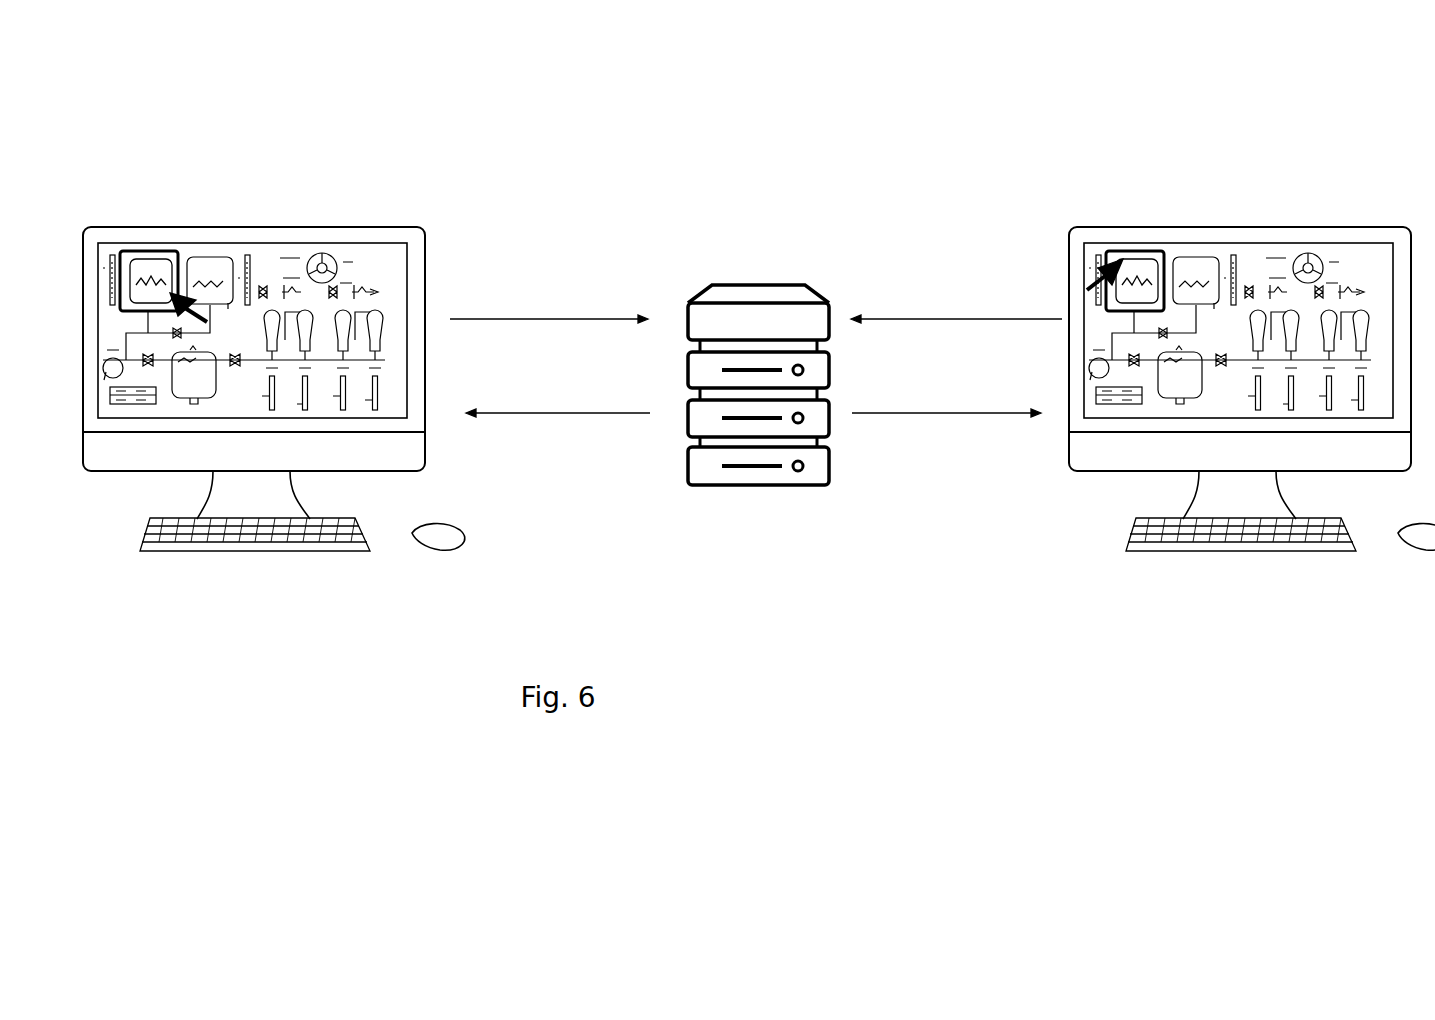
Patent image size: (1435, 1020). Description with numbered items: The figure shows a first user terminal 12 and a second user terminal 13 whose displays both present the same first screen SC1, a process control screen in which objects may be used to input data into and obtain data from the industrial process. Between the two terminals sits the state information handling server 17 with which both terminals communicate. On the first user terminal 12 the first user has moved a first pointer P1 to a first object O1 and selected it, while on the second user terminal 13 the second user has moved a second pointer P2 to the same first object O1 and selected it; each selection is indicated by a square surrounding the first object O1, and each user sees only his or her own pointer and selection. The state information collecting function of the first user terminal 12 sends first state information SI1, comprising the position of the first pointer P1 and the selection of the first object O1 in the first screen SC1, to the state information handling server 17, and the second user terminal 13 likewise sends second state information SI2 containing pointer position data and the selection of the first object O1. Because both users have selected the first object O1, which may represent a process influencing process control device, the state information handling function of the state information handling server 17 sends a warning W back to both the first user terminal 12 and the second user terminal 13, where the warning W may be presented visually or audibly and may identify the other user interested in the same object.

The first user terminal 12 is at (274, 439).
The second user terminal 13 is at (1252, 439).
The state information handling server 17 is at (758, 433).
The first object O1 is at (162, 263).
The first pointer P1 is at (200, 307).
The second pointer P2 is at (1093, 268).
The first screen SC1 is at (287, 248).
The first state information SI1 is at (549, 295).
The second state information SI2 is at (956, 295).
The warning W is at (753, 390).